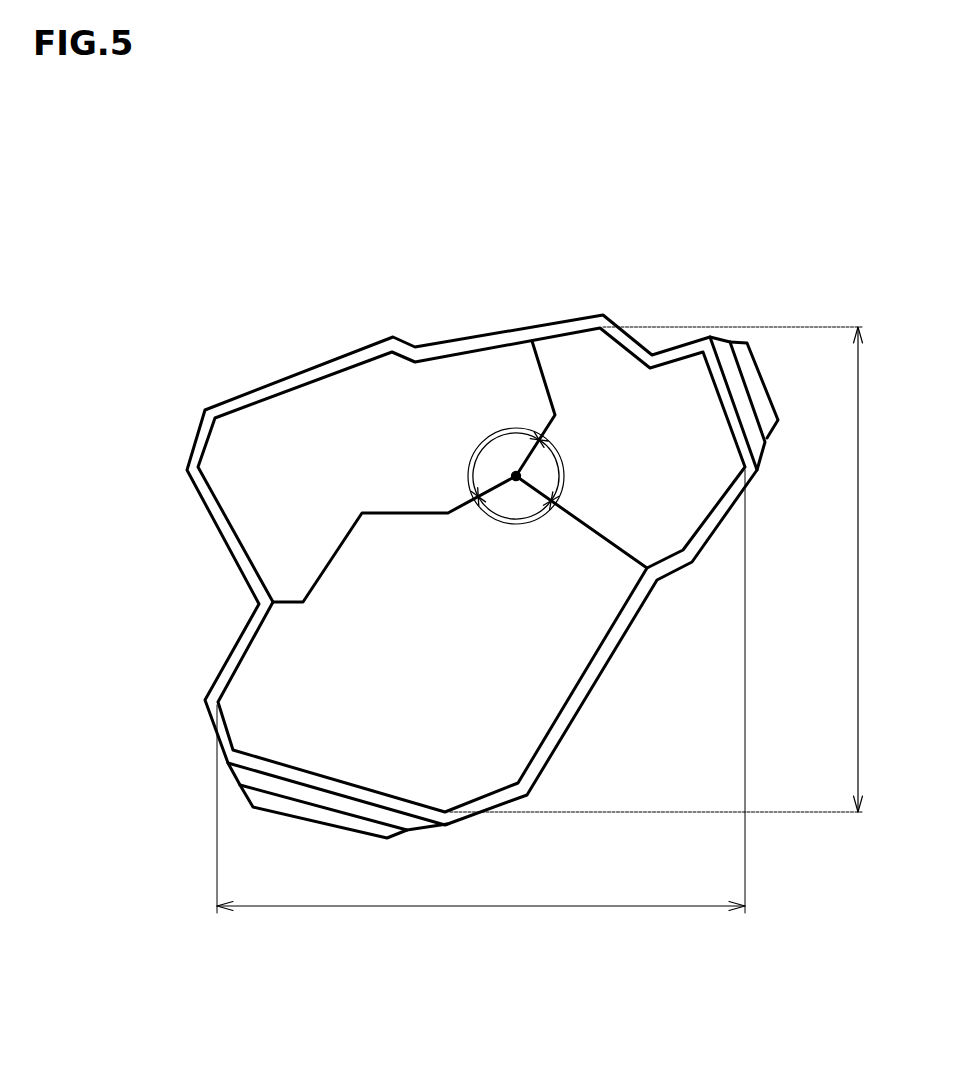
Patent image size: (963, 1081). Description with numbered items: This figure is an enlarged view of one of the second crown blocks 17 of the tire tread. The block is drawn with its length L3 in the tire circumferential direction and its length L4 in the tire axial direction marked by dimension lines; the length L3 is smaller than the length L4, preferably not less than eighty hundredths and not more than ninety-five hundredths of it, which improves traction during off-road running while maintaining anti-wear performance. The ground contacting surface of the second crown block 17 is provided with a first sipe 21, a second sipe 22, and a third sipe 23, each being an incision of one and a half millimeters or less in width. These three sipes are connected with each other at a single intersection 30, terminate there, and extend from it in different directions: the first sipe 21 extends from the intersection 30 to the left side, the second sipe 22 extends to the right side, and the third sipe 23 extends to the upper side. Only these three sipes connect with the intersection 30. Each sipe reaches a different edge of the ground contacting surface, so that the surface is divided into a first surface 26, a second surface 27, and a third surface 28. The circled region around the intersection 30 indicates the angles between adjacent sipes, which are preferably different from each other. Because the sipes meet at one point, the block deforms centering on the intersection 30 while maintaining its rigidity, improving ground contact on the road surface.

The second crown block 17 is at (240, 357).
The first sipe 21 is at (332, 558).
The second sipe 22 is at (595, 532).
The third sipe 23 is at (538, 378).
The first surface 26 is at (455, 648).
The second surface 27 is at (376, 464).
The third surface 28 is at (664, 468).
The intersection 30 is at (516, 476).
The length in the tire circumferential direction L3 is at (675, 569).
The length in the tire axial direction L4 is at (481, 707).